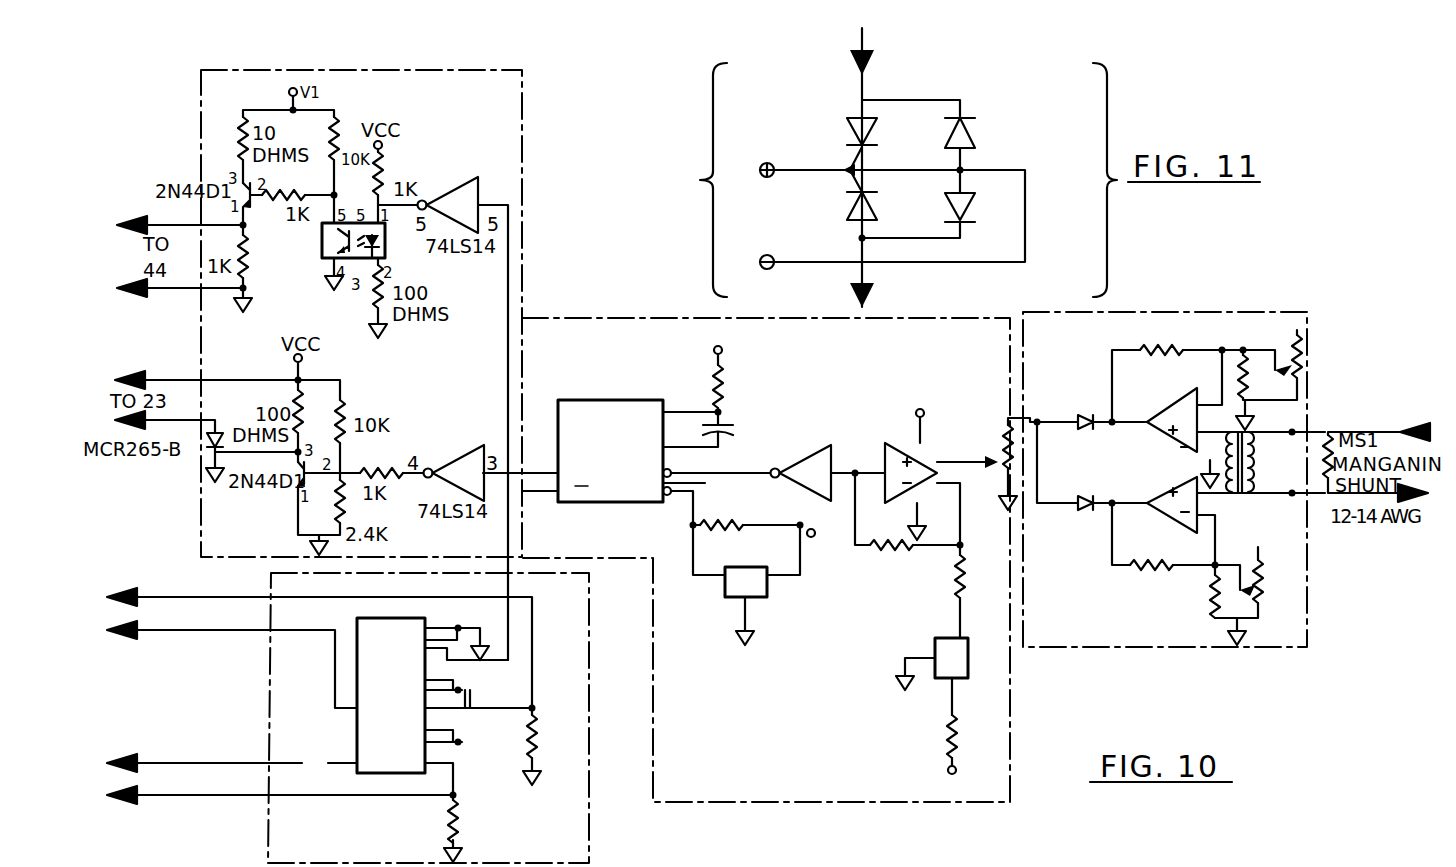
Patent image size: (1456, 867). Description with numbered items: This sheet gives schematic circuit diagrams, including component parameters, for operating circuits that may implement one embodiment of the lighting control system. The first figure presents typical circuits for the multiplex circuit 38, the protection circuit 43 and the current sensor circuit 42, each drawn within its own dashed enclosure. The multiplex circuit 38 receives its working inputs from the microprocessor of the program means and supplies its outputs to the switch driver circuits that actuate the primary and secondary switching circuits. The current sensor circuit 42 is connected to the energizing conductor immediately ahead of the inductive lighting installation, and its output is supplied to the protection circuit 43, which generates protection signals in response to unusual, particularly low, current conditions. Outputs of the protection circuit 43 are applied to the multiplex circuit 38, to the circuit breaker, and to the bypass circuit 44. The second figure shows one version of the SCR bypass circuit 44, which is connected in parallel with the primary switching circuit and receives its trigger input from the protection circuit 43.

In FIG. 10, the multiplex circuit 38 is at (588, 745).
In FIG. 10, the current sensor circuit 42 is at (1150, 311).
In FIG. 10, the protection circuit 43 is at (570, 316).
In FIG. 11, the bypass circuit 44 is at (1037, 230).